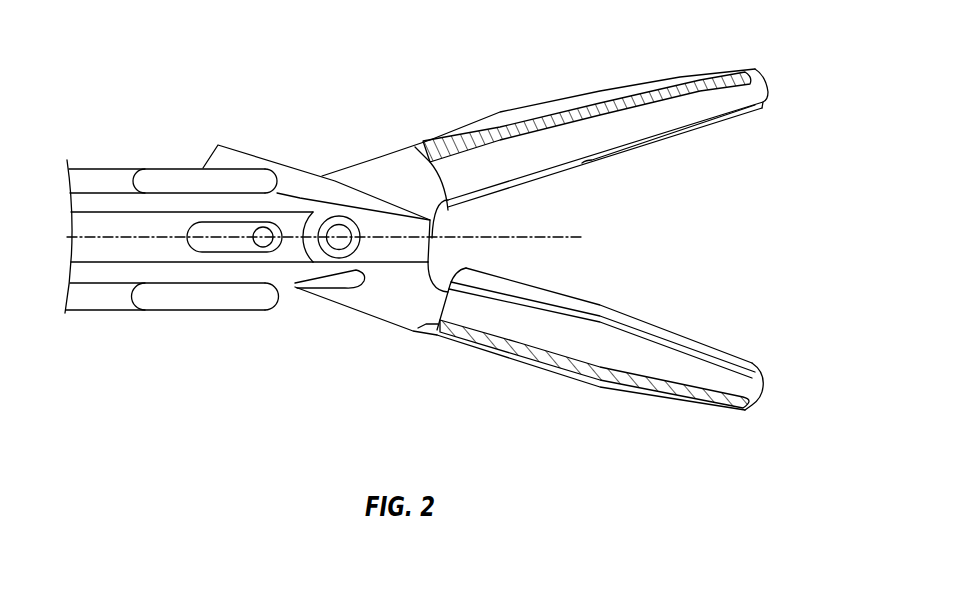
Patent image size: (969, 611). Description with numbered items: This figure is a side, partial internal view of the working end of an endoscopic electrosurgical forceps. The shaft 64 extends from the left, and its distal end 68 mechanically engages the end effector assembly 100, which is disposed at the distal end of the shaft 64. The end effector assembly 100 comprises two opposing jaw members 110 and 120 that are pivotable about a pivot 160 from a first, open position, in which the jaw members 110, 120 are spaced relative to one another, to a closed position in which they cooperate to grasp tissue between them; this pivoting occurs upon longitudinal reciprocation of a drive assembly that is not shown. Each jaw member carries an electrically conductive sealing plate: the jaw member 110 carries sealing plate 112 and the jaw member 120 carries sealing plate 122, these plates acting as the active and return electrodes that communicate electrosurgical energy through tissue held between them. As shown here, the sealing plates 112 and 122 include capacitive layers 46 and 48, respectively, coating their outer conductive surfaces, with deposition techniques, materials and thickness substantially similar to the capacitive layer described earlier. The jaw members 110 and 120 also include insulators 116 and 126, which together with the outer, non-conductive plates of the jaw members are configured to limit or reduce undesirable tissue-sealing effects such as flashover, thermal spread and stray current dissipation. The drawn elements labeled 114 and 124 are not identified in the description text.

The end effector assembly 100 is at (520, 42).
The distal end 68 is at (166, 150).
The shaft 64 is at (131, 170).
The pivot 160 is at (338, 238).
The jaw member 110 is at (635, 88).
The electrically conductive sealing plate 112 is at (582, 163).
The upper jaw proximal end 114 is at (493, 162).
The insulator 116 is at (742, 73).
The capacitive layer 46 is at (697, 140).
The capacitive layer 48 is at (685, 338).
The electrically conductive sealing plate 122 is at (735, 362).
The insulator 126 is at (763, 393).
The jaw member 120 is at (593, 388).
The lower jaw serrations 124 is at (512, 330).